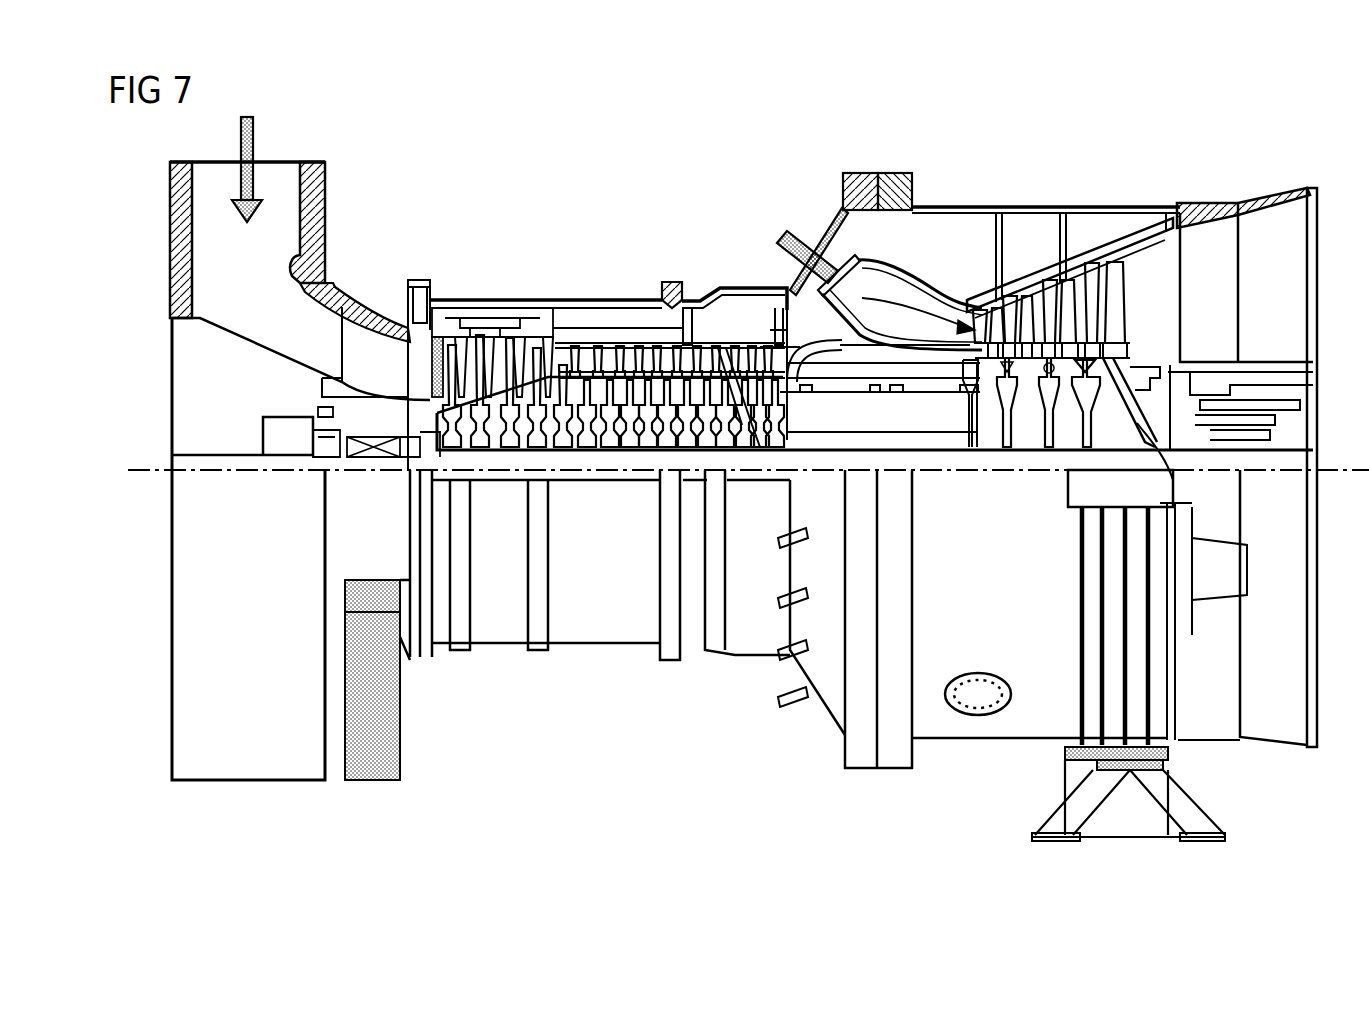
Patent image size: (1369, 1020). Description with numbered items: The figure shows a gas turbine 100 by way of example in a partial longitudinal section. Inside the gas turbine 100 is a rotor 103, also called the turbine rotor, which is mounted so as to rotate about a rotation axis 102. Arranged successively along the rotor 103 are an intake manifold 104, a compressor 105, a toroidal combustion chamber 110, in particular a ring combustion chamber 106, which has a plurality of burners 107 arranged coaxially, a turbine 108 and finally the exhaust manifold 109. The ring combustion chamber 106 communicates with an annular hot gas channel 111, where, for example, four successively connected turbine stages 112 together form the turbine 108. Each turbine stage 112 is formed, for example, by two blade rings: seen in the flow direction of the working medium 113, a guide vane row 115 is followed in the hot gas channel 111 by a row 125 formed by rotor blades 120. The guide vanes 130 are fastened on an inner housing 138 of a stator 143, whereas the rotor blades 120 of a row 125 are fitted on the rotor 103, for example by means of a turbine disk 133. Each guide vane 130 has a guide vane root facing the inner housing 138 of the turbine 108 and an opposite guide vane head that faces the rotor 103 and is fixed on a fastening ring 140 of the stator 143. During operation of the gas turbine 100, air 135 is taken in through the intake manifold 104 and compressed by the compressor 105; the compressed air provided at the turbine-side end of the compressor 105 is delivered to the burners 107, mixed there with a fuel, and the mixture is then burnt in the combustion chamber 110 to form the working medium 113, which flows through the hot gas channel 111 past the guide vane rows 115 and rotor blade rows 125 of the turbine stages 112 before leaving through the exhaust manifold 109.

The gas turbine 100 is at (605, 176).
The rotation axis 102 is at (145, 470).
The rotor 103 is at (857, 432).
The intake manifold 104 is at (317, 200).
The compressor 105 is at (503, 268).
The ring combustion chamber 106 is at (946, 290).
The burners 107 is at (780, 246).
The turbine 108 is at (983, 158).
The exhaust manifold 109 is at (1215, 212).
The combustion chamber 110 is at (868, 256).
The hot gas channel 111 is at (1150, 272).
The turbine stages 112 is at (1125, 158).
The working medium 113 is at (872, 280).
The guide vane row 115 is at (1096, 243).
The rotor blades 120 is at (1075, 330).
The row 125 is at (1146, 220).
The guide vanes 130 is at (1095, 308).
The turbine disk 133 is at (1173, 480).
The air 135 is at (253, 140).
The inner housing 138 is at (1032, 243).
The fastening ring 140 is at (968, 410).
The stator 143 is at (952, 207).